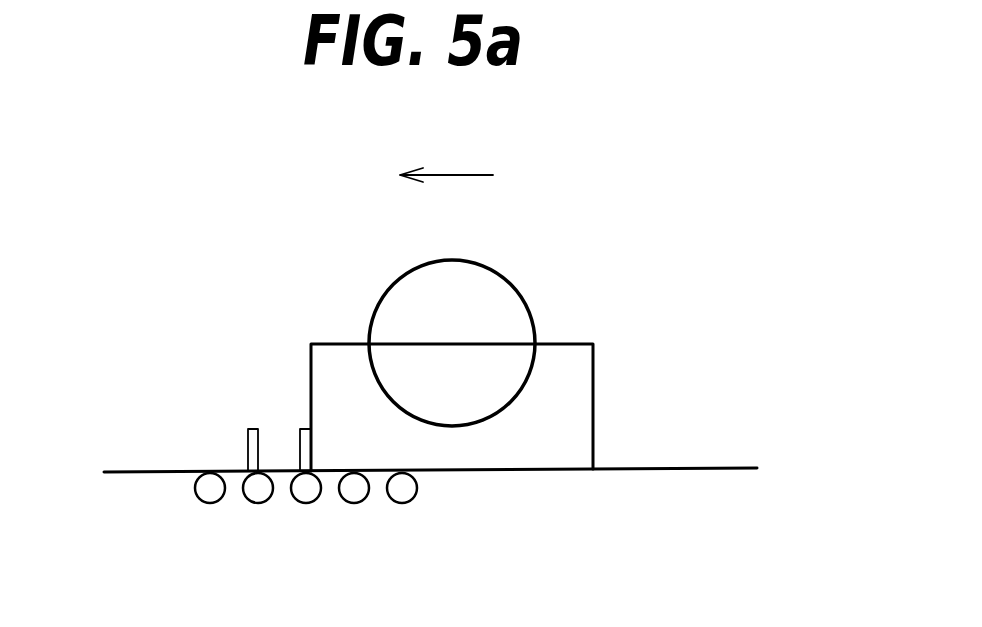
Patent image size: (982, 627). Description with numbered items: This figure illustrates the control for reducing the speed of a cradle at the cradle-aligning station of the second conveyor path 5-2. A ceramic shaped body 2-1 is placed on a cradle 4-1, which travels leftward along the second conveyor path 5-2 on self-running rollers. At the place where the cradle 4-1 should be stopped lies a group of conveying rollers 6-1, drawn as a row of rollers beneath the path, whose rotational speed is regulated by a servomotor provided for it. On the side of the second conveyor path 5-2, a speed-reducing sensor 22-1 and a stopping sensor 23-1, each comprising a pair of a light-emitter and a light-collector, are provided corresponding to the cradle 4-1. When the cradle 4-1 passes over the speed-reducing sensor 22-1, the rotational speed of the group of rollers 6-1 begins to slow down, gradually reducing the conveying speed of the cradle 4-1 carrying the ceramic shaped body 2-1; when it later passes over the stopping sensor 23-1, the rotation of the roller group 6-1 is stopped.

The ceramic shaped body 2-1 is at (473, 298).
The cradle 4-1 is at (568, 375).
The second conveyor path 5-2 is at (690, 451).
The group of conveying rollers 6-1 is at (428, 505).
The speed-reducing sensor 22-1 is at (305, 444).
The stopping sensor 23-1 is at (245, 434).